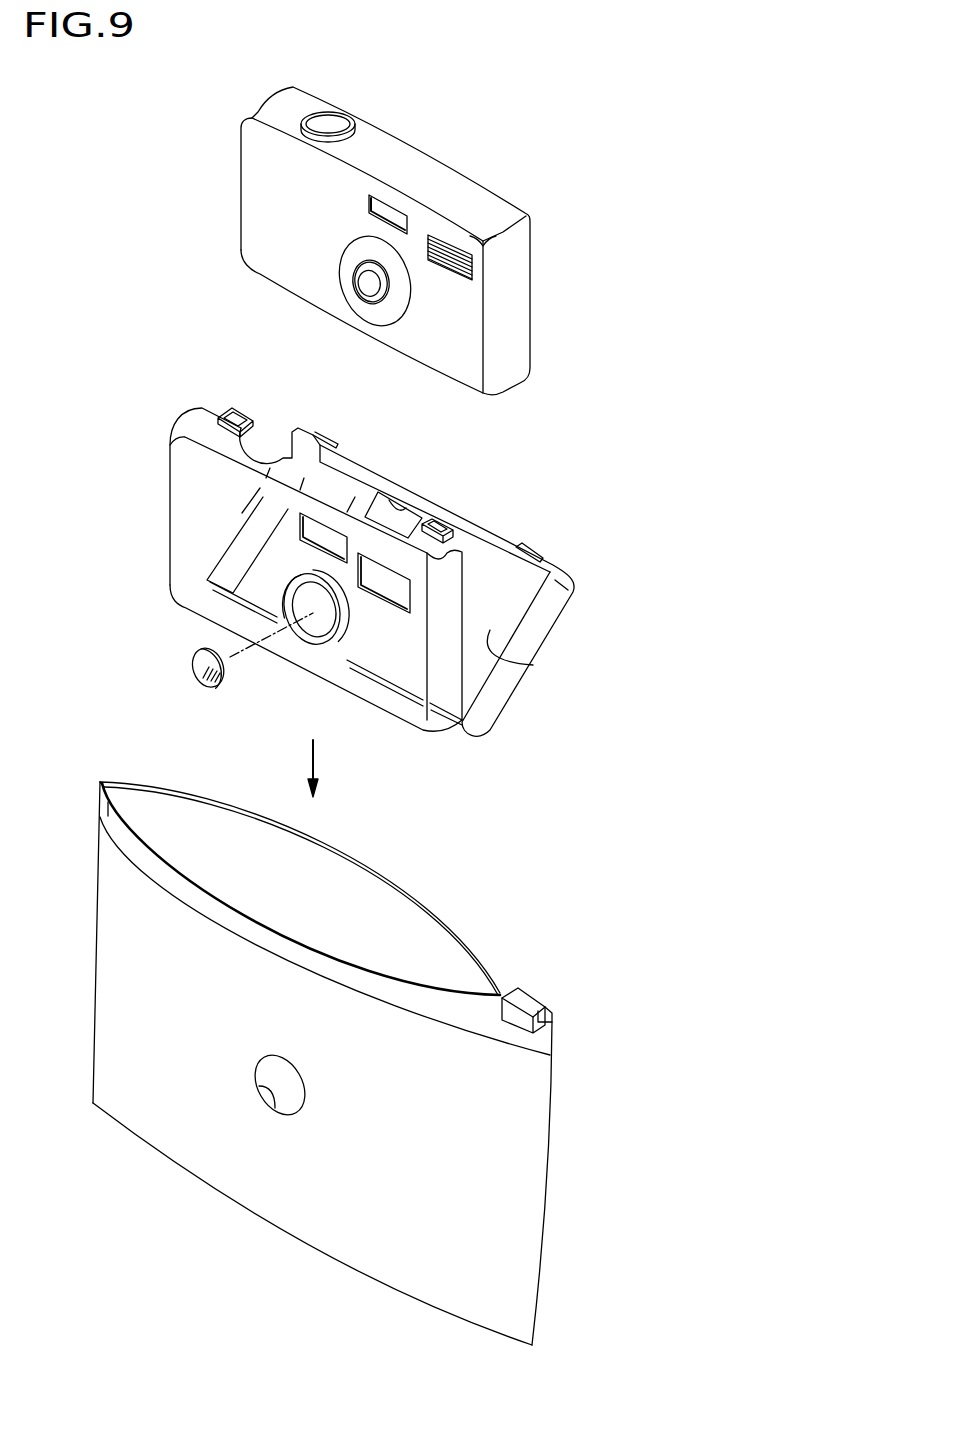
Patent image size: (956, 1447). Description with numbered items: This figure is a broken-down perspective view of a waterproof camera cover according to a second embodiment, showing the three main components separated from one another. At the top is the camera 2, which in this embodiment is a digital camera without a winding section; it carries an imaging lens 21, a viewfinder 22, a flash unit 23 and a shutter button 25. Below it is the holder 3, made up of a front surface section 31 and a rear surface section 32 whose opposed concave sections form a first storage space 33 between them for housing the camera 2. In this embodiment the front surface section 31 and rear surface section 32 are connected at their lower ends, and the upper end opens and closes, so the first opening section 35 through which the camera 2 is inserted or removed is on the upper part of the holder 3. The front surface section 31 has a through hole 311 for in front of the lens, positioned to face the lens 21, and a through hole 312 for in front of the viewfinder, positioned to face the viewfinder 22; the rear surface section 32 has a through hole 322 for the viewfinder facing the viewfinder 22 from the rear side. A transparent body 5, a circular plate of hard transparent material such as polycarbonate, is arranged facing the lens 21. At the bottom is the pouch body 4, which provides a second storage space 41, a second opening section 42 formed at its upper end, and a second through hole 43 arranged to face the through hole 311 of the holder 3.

The camera 2 is at (592, 208).
The imaging lens 21 is at (366, 279).
The viewfinder 22 is at (387, 207).
The flash unit 23 is at (461, 272).
The shutter button 25 is at (318, 118).
The holder 3 is at (417, 572).
The front surface section 31 is at (185, 537).
The through hole for in front of the lens 311 is at (325, 617).
The through hole for in front of the viewfinder 312 is at (305, 533).
The rear surface section 32 is at (563, 620).
The through hole for the viewfinder 322 is at (404, 506).
The first storage space 33 is at (533, 665).
The first opening section 35 is at (494, 558).
The transparent body 5 is at (192, 662).
The pouch body 4 is at (398, 1063).
The second storage space 41 is at (427, 941).
The second opening section 42 is at (450, 967).
The second through hole 43 is at (258, 1088).